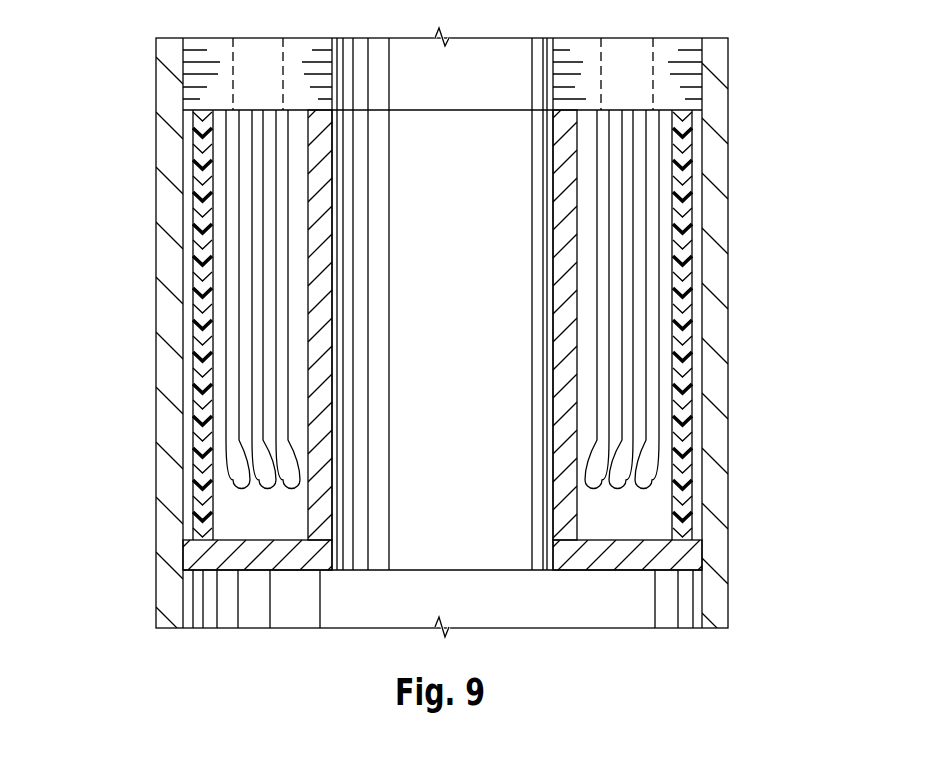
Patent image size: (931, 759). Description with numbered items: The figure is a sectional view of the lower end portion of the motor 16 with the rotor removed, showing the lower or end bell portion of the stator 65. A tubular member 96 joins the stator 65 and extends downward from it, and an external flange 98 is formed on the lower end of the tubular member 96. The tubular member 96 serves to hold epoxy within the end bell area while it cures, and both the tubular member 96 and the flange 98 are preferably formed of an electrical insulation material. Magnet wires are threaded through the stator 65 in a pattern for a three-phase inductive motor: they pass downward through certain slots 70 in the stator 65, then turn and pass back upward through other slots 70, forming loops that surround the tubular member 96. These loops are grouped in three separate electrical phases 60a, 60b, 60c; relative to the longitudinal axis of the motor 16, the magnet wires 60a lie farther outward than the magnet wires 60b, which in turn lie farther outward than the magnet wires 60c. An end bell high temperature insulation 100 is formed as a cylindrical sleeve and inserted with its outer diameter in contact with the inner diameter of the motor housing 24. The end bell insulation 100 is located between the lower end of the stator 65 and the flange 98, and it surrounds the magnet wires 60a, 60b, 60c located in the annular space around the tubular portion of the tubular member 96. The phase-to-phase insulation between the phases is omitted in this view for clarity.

The motor 16 is at (116, 116).
The motor housing 24 is at (156, 192).
The magnet wires of first electrical phase 60a is at (226, 383).
The magnet wires of second electrical phase 60b is at (252, 413).
The magnet wires of third electrical phase 60c is at (288, 445).
The stator 65 is at (307, 43).
The slots 70 is at (236, 46).
The tubular member 96 is at (555, 207).
The external flange 98 is at (617, 568).
The end bell high temperature insulation 100 is at (712, 323).